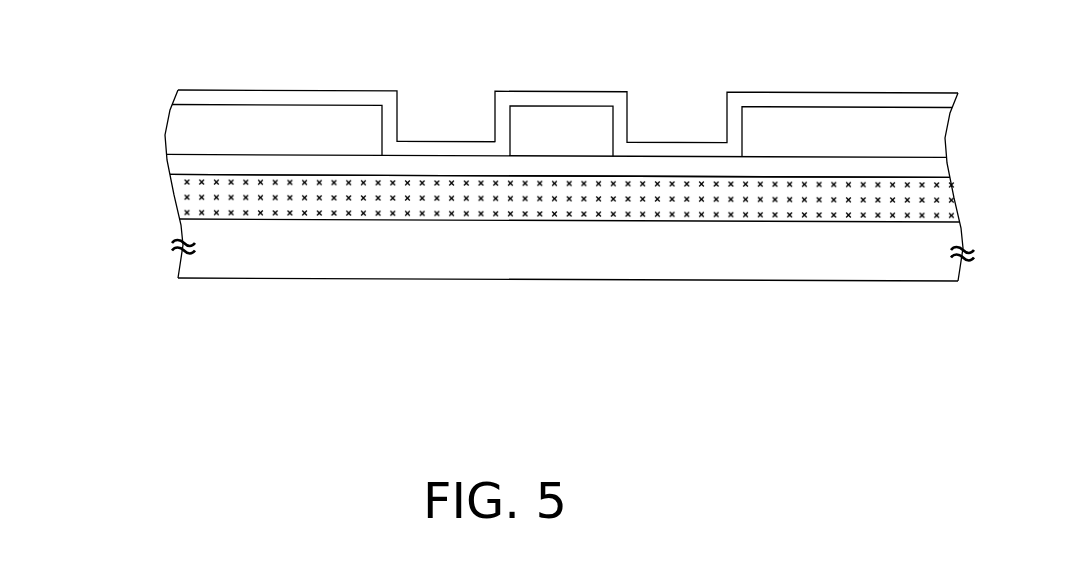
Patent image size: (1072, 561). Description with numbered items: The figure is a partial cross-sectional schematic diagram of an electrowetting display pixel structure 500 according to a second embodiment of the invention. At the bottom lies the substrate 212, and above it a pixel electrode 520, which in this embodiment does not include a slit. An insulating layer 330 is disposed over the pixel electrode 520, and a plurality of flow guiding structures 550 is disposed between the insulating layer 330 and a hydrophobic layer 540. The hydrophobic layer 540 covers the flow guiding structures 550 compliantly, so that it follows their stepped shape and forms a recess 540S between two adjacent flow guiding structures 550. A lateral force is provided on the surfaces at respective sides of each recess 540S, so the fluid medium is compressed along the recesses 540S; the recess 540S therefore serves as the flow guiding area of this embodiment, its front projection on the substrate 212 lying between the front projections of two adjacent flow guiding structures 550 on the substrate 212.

The hydrophobic layer 540 is at (185, 97).
The recess 540S is at (440, 100).
The flow guiding structures 550 is at (178, 131).
The insulating layer 330 is at (178, 167).
The pixel electrode 520 is at (185, 197).
The substrate 212 is at (186, 231).
The electrowetting display pixel structure 500 is at (1043, 396).